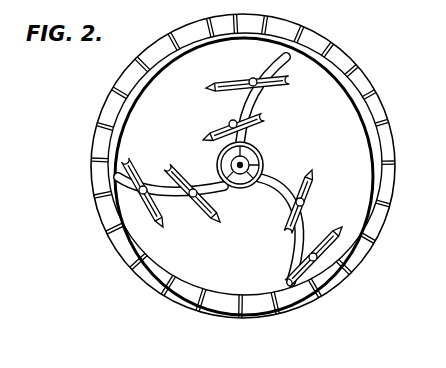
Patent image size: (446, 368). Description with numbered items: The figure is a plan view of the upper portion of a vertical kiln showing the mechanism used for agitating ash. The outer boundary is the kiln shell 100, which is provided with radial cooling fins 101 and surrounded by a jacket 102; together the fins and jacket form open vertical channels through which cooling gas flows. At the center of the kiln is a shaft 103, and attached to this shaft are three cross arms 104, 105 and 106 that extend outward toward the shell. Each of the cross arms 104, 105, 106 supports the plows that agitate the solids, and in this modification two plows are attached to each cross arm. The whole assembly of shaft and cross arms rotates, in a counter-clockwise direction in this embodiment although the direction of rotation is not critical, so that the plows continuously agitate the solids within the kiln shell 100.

The kiln shell 100 is at (379, 114).
The radial cooling fins 101 is at (373, 192).
The jacket 102 is at (382, 221).
The shaft 103 is at (247, 190).
The cross arm 104 is at (246, 101).
The cross arm 105 is at (275, 169).
The cross arm 106 is at (183, 200).